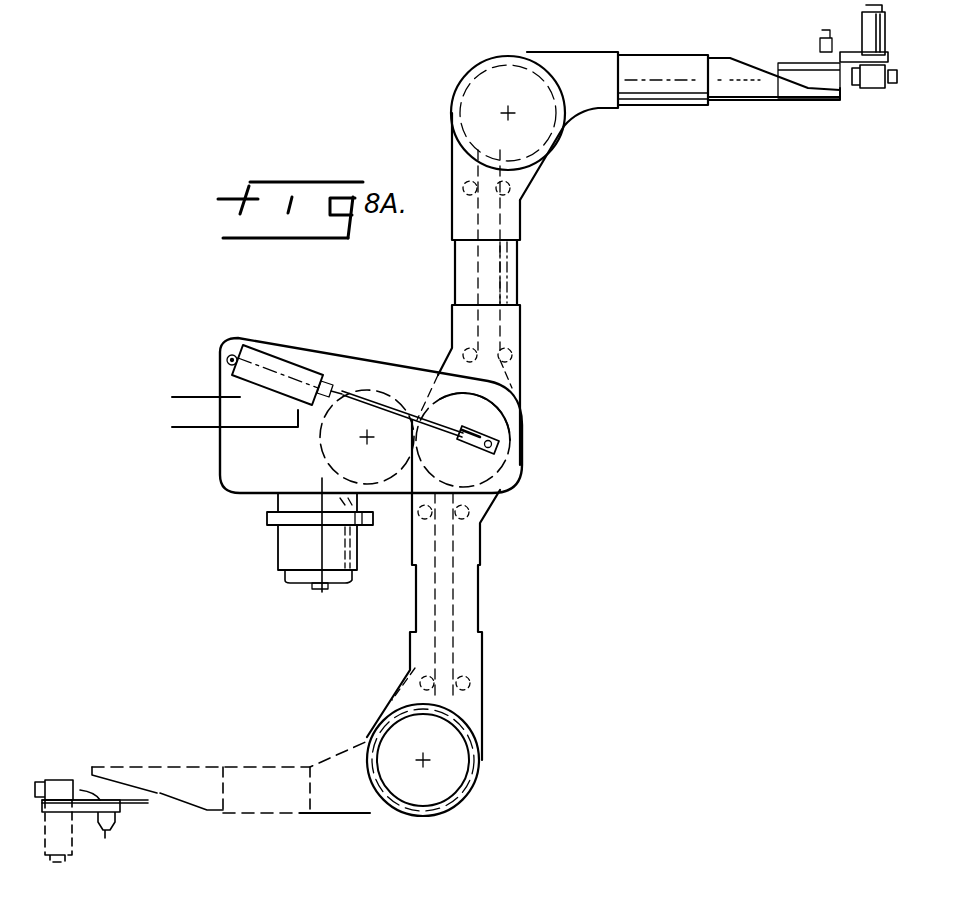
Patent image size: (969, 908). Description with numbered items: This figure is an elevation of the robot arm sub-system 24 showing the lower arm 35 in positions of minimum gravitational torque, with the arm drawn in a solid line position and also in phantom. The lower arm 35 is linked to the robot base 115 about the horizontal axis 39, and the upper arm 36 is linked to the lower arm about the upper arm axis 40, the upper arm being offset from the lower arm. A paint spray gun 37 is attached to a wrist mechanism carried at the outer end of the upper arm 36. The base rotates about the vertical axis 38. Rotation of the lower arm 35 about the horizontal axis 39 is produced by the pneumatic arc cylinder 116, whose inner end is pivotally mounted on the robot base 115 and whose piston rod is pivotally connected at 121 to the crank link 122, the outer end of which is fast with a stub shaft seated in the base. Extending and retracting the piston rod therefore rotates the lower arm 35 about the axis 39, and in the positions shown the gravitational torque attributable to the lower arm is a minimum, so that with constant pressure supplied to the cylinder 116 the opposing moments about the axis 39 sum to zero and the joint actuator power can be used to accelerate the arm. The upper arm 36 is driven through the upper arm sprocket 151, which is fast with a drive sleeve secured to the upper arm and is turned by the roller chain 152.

The robot arm sub-system 24 is at (430, 340).
The lower arm 35 is at (516, 278).
The upper arm 36 is at (687, 100).
The paint spray gun 37 is at (863, 92).
The vertical axis 38 is at (320, 589).
The horizontal axis 39 is at (505, 400).
The upper arm axis 40 is at (506, 110).
The robot base 115 is at (217, 467).
The pneumatic arc cylinder 116 is at (274, 361).
The pivotal connection 121 is at (512, 462).
The crank link 122 is at (500, 430).
The upper arm sprocket 151 is at (531, 48).
The roller chain 152 is at (505, 222).